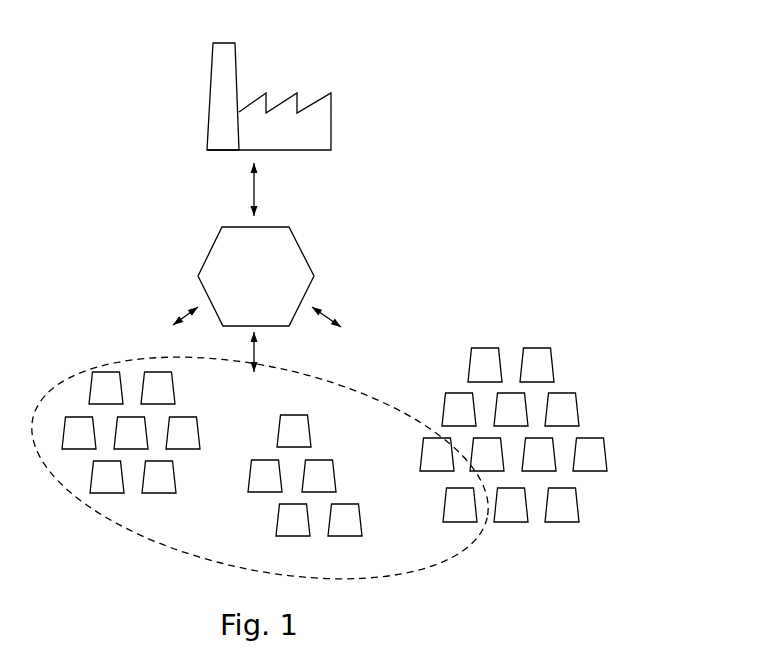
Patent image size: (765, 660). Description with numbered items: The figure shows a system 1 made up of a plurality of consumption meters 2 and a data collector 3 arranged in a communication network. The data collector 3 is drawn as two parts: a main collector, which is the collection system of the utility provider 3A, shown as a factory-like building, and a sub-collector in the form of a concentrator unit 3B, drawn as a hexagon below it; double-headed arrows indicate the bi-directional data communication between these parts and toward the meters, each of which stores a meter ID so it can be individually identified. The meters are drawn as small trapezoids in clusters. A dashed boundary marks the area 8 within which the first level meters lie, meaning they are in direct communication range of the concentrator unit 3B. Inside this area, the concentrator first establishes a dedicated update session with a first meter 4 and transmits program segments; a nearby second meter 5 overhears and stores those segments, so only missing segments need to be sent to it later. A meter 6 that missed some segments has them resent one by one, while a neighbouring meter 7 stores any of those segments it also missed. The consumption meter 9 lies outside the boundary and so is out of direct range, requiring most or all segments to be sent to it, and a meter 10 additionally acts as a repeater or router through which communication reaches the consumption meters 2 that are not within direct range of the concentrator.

The system 1 is at (434, 236).
The consumption meters 2 is at (600, 343).
The data collector 3 is at (207, 127).
The collection system of the utility provider 3A is at (213, 63).
The concentrator unit 3B is at (289, 227).
The first meter 4 is at (310, 430).
The second meter 5 is at (252, 477).
The meter 6 is at (67, 419).
The meter 7 is at (91, 380).
The area 8 is at (135, 357).
The consumption meter 9 is at (443, 412).
The meter 10 is at (434, 470).